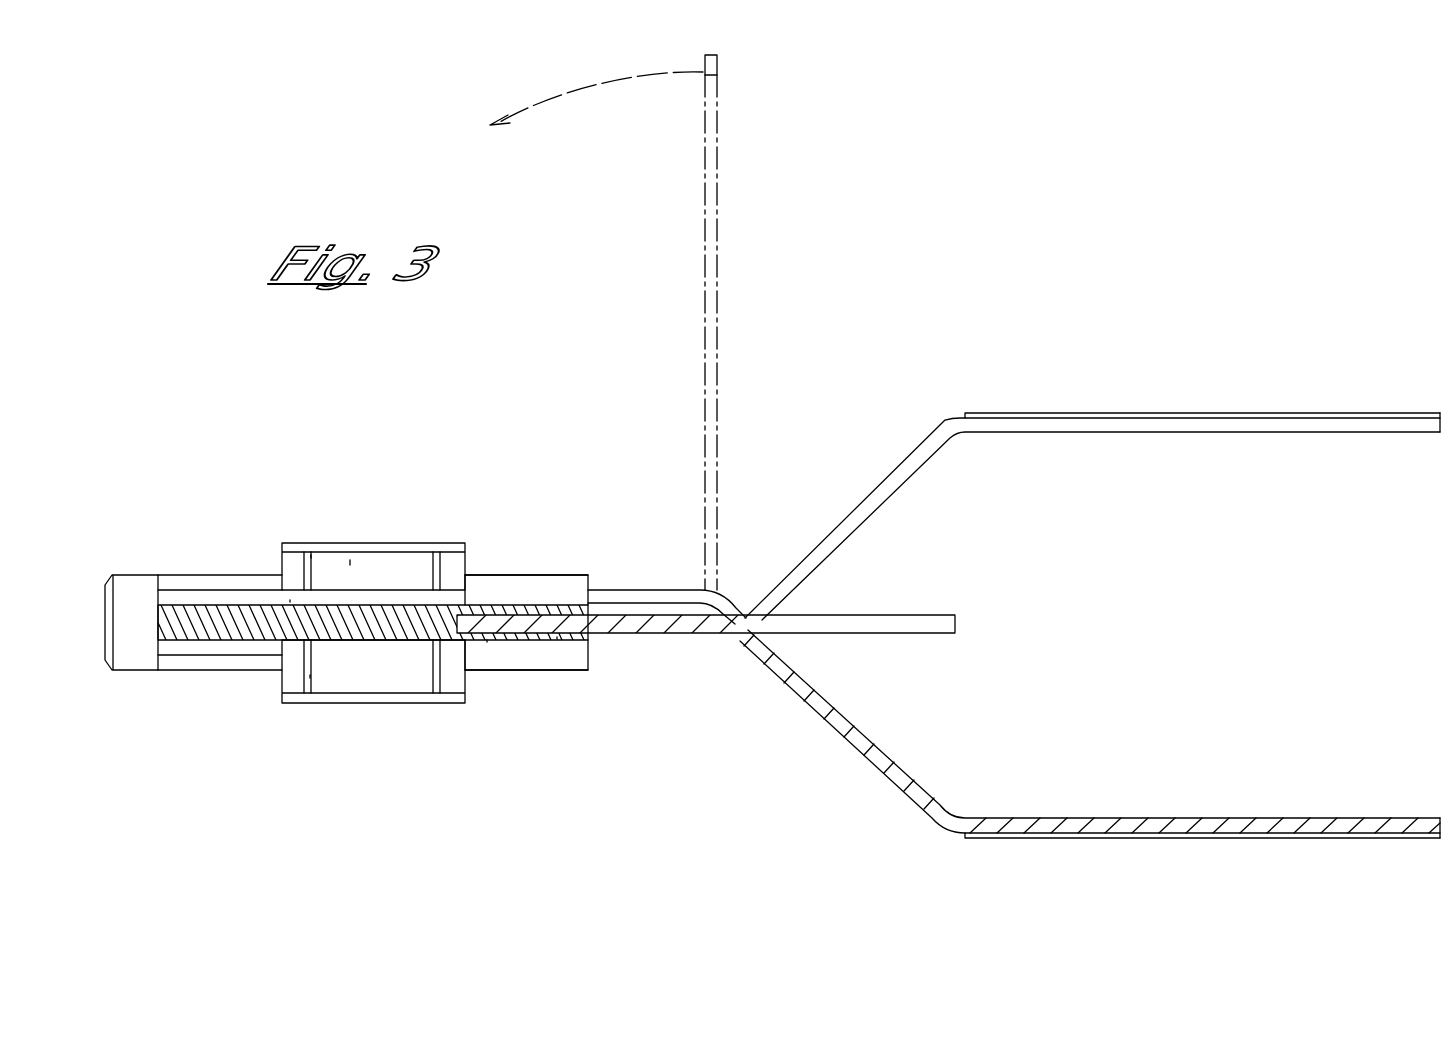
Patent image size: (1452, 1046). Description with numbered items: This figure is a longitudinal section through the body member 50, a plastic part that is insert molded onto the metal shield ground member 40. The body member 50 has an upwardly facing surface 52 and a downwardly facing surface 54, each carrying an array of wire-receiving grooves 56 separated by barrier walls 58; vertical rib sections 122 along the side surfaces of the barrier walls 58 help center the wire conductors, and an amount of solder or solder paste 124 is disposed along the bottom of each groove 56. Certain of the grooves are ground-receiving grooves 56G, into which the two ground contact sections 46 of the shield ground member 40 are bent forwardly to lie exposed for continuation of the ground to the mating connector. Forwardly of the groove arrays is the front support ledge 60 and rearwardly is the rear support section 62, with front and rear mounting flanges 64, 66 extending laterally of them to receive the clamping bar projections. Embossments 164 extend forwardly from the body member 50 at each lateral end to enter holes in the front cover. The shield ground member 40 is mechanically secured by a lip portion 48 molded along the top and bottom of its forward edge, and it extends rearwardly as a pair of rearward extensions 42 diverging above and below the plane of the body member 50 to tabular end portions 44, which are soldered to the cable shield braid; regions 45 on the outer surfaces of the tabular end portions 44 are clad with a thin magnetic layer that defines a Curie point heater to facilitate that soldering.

The shield ground member 40 is at (905, 615).
The rearward extensions 42 is at (875, 490).
The tabular end portions 44 is at (1285, 433).
The regions of magnetic material layer 45 is at (1120, 413).
The ground contact sections 46 is at (692, 181).
The lip portion 48 is at (588, 635).
The body member 50 is at (398, 453).
The upwardly facing surface 52 is at (527, 607).
The downwardly facing surface 54 is at (557, 637).
The wire-receiving grooves 56 is at (378, 662).
The ground-receiving grooves 56G is at (353, 568).
The barrier walls 58 is at (433, 545).
The front support ledge 60 is at (178, 652).
The rear support section 62 is at (487, 640).
The front mounting flanges 64 is at (218, 658).
The rear mounting flanges 66 is at (528, 662).
The vertical rib sections 122 is at (316, 556).
The solder or solder paste 124 is at (258, 732).
The embossments 164 is at (132, 652).